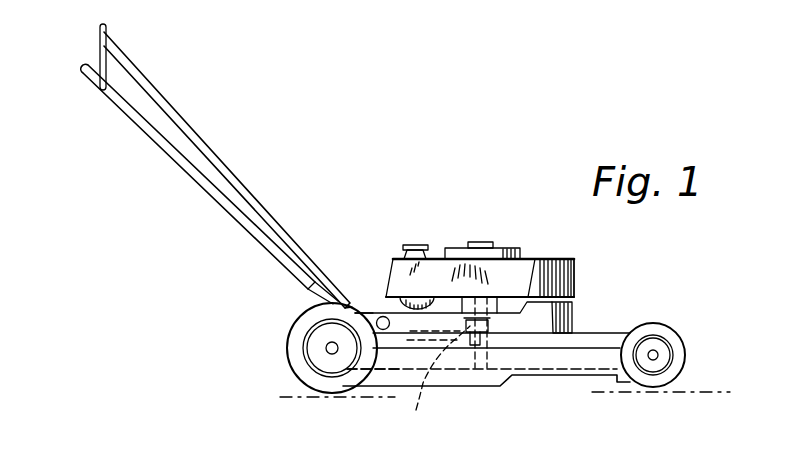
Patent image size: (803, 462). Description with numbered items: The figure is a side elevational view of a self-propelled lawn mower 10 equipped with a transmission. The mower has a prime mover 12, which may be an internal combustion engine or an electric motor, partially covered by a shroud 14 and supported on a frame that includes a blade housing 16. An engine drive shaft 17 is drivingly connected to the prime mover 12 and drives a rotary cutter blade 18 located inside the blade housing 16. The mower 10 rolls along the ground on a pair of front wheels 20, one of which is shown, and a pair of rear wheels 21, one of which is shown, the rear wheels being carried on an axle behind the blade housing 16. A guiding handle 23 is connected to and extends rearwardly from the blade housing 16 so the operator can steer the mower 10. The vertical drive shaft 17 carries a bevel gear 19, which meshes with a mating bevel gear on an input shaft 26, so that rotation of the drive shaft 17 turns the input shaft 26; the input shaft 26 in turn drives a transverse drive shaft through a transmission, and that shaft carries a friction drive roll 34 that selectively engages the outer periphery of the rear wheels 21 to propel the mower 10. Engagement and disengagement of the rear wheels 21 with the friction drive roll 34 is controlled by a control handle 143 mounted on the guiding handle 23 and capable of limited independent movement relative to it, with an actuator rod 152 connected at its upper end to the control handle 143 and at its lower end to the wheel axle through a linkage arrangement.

The self-propelled lawn mower 10 is at (412, 217).
The prime mover 12 is at (455, 248).
The shroud 14 is at (552, 258).
The blade housing 16 is at (608, 338).
The engine drive shaft 17 is at (473, 292).
The rotary cutter blade 18 is at (400, 370).
The bevel gear 19 is at (497, 322).
The front wheel 20 is at (677, 353).
The rear wheel 21 is at (290, 322).
The guiding handle 23 is at (147, 130).
The input shaft 26 is at (443, 375).
The friction drive roll 34 is at (379, 316).
The control handle 143 is at (98, 30).
The actuator rod 152 is at (181, 125).